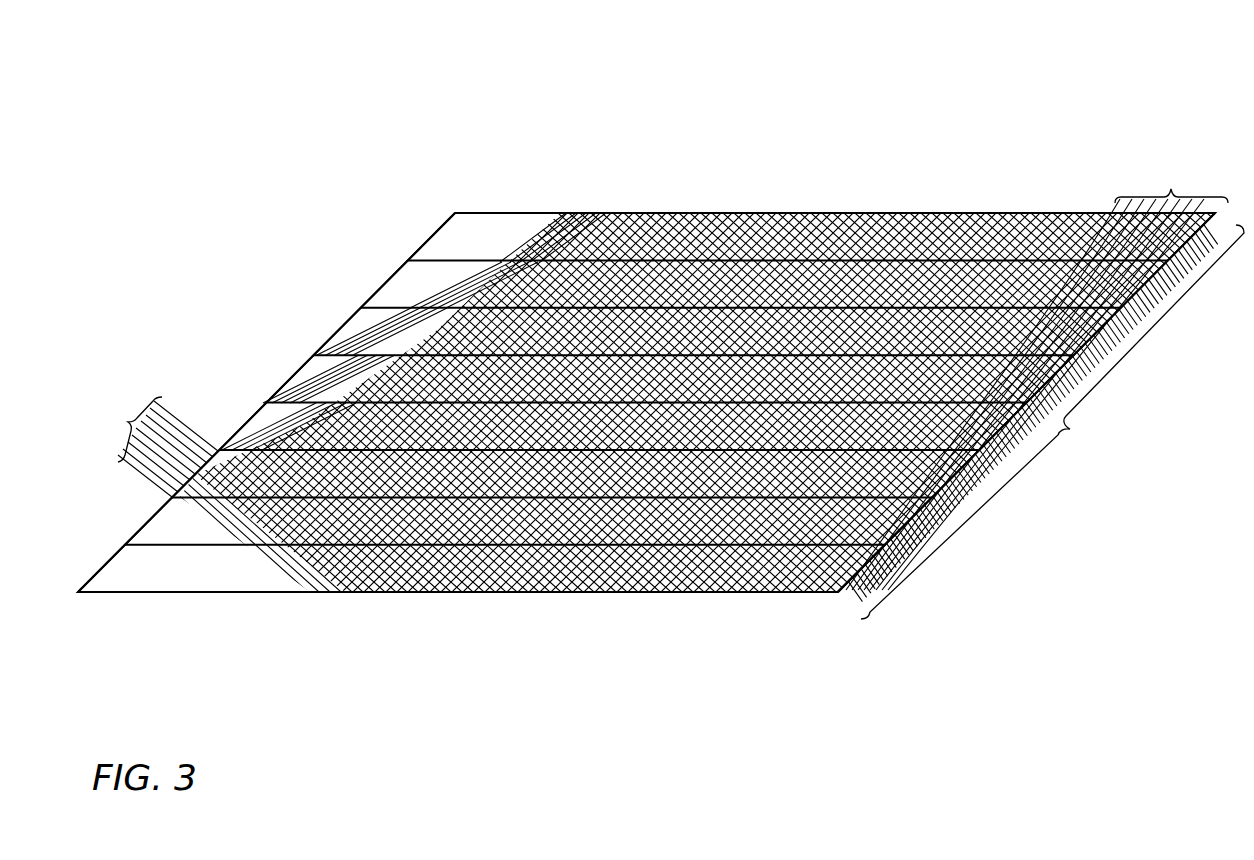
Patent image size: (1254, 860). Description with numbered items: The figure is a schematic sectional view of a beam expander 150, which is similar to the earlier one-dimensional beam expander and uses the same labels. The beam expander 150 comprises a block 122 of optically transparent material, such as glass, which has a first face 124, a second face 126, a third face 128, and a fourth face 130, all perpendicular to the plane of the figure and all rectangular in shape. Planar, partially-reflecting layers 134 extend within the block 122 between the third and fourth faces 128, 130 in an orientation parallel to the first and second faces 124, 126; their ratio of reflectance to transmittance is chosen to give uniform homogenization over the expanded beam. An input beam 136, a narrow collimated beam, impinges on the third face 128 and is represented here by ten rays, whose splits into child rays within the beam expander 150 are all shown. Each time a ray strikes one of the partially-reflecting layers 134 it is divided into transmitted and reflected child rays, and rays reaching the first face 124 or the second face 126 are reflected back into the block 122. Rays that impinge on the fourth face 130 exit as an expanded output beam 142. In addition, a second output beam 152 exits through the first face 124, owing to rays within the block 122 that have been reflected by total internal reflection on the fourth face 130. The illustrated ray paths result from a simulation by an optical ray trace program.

The beam expander 150 is at (810, 66).
The block 122 is at (764, 232).
The first face 124 is at (482, 213).
The second face 126 is at (497, 593).
The third face 128 is at (381, 281).
The fourth face 130 is at (947, 473).
The partially-reflecting layers 134 is at (667, 498).
The input beam 136 is at (154, 447).
The output beam 142 is at (1046, 421).
The second output beam 152 is at (1037, 375).